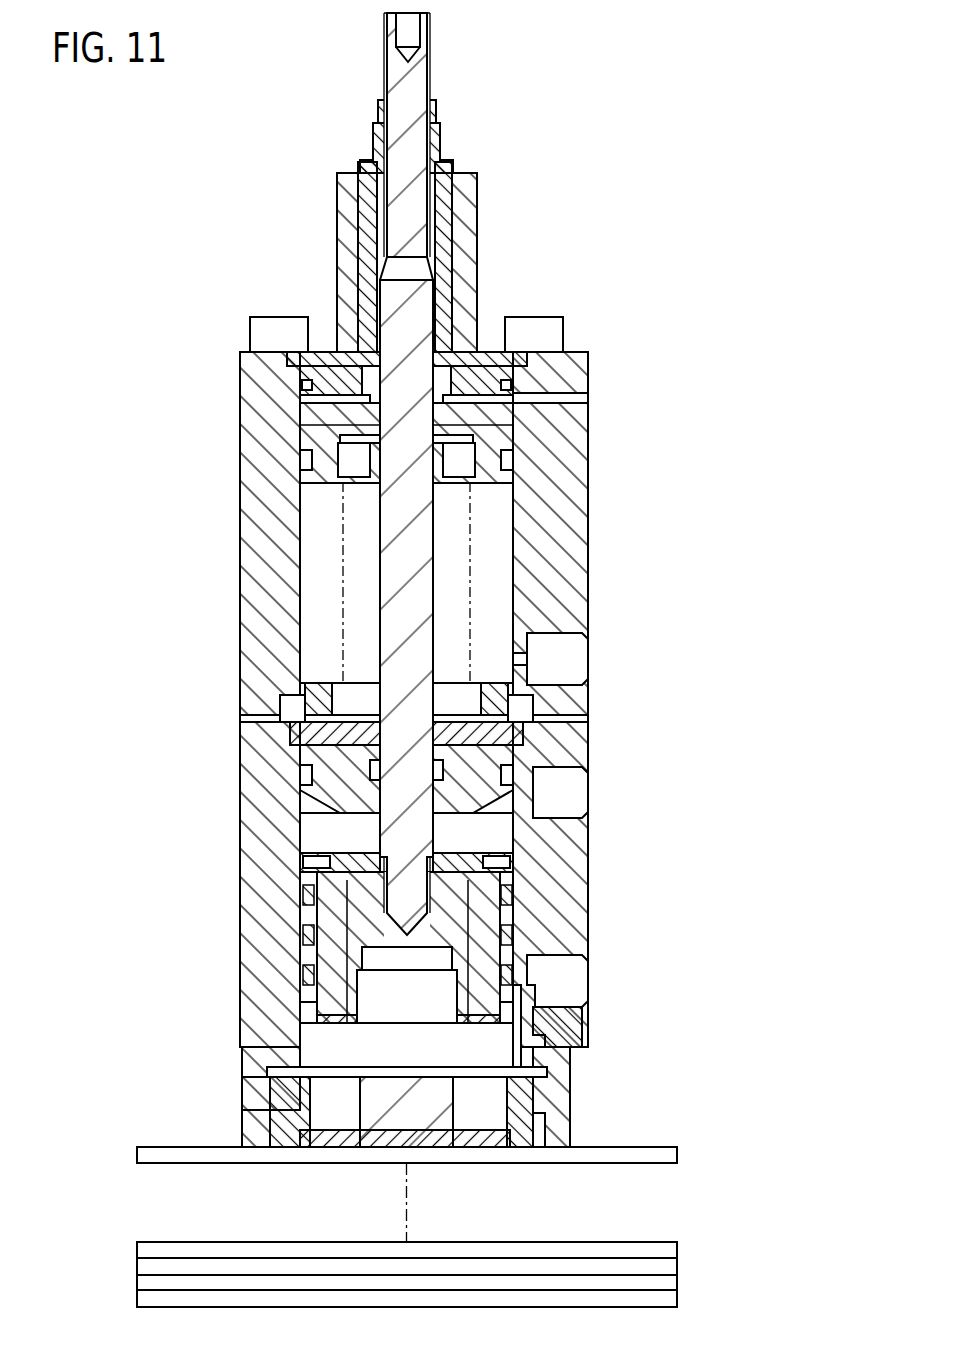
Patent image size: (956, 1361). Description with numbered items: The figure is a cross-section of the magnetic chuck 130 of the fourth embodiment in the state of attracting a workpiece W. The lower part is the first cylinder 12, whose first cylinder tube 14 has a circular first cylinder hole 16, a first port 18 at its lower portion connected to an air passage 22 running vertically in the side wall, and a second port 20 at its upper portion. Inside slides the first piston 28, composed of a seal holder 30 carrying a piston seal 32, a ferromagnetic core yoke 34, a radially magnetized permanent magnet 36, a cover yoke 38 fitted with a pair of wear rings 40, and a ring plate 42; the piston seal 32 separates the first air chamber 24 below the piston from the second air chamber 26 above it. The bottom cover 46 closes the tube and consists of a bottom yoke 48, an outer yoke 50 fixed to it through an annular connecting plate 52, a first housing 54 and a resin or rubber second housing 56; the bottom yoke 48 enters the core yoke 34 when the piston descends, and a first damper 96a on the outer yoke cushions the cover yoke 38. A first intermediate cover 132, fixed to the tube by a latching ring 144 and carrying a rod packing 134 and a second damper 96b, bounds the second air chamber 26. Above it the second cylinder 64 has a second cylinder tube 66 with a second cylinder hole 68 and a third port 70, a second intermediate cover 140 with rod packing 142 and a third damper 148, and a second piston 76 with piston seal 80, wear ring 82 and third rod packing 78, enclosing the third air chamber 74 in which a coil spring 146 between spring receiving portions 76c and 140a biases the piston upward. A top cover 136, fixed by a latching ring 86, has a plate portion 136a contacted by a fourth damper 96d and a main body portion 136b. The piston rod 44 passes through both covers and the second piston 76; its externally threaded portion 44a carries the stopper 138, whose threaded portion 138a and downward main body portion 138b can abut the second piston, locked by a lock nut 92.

The magnetic chuck 130 is at (174, 126).
The lock nut 92 is at (430, 98).
The piston rod 44 is at (405, 578).
The externally threaded portion 44a is at (395, 147).
The stopper 138 is at (462, 155).
The threaded portion 138a is at (443, 140).
The main body portion 138b is at (445, 208).
The top cover 136 is at (482, 245).
The plate portion 136a is at (500, 366).
The main body portion 136b is at (463, 285).
The latching ring 86 is at (303, 352).
The fourth damper 96d is at (310, 400).
The third rod packing 78 is at (320, 430).
The second piston 76 is at (330, 470).
The spring receiving portion 76c is at (372, 468).
The second cylinder 64 is at (232, 498).
The second cylinder tube 66 is at (258, 552).
The second cylinder hole 68 is at (310, 622).
The third air chamber 74 is at (490, 535).
The piston seal 80 is at (505, 430).
The coil spring 146 is at (490, 445).
The wear ring 82 is at (520, 470).
The third port 70 is at (568, 650).
The second intermediate cover 140 is at (520, 718).
The spring receiving portion 140a is at (362, 715).
The third damper 148 is at (493, 683).
The rod packing 142 is at (295, 728).
The latching ring 144 is at (525, 750).
The first intermediate cover 132 is at (335, 770).
The rod packing 134 is at (378, 765).
The second damper 96b is at (320, 805).
The second air chamber 26 is at (490, 830).
The second port 20 is at (570, 793).
The first cylinder 12 is at (215, 880).
The first cylinder tube 14 is at (255, 990).
The wear rings 40 is at (520, 945).
The first port 18 is at (565, 978).
The first piston 28 is at (515, 990).
The air passage 22 is at (528, 1033).
The piston seal 32 is at (320, 862).
The seal holder 30 is at (327, 862).
The permanent magnet 36 is at (335, 965).
The core yoke 34 is at (378, 925).
The cover yoke 38 is at (308, 915).
The ring plate 42 is at (480, 1022).
The first cylinder hole 16 is at (300, 1035).
The first air chamber 24 is at (320, 1060).
The first housing 54 is at (265, 1093).
The second housing 56 is at (258, 1128).
The outer yoke 50 is at (300, 1135).
The connecting plate 52 is at (338, 1135).
The bottom yoke 48 is at (440, 1130).
The bottom cover 46 is at (497, 1150).
The first damper 96a is at (535, 1088).
The workpiece W is at (655, 1165).